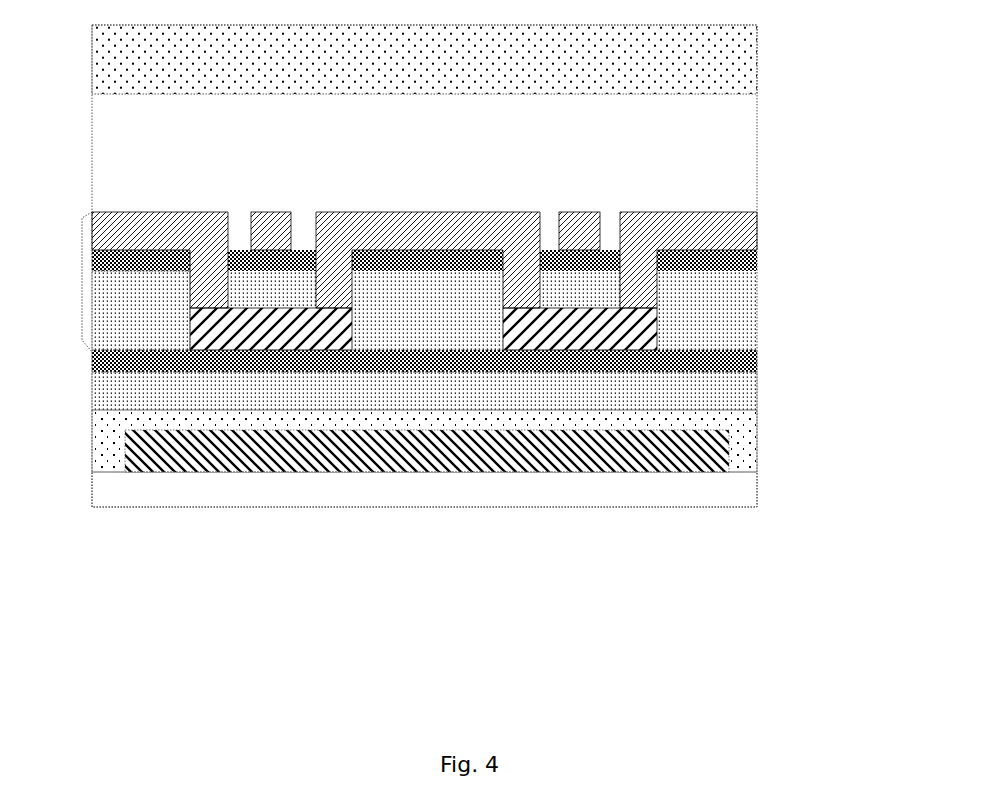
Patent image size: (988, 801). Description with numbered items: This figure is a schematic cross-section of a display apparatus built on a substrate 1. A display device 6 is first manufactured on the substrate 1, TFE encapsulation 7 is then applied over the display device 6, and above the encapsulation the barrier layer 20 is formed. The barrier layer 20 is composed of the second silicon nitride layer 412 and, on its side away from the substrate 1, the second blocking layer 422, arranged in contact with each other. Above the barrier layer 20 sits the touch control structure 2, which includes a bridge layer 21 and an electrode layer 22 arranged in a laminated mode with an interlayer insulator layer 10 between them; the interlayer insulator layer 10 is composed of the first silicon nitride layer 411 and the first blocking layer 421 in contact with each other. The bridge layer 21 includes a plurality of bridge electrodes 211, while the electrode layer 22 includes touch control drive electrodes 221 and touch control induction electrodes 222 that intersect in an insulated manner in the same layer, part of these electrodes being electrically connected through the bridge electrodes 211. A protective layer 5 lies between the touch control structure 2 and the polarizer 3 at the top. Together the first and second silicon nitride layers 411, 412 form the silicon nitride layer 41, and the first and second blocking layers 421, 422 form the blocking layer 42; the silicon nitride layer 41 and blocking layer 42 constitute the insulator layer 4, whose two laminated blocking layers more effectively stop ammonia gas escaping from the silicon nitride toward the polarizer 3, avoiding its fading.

The substrate 1 is at (712, 490).
The touch control structure 2 is at (470, 443).
The polarizer 3 is at (717, 62).
The insulator layer 4 is at (505, 330).
The protective layer 5 is at (717, 153).
The display device 6 is at (710, 451).
The TFE encapsulation 7 is at (740, 424).
The interlayer insulator layer 10 is at (486, 300).
The barrier layer 20 is at (486, 380).
The bridge layer 21 is at (423, 519).
The bridge electrode 211 is at (273, 333).
The electrode layer 22 is at (485, 232).
The touch control drive electrode 221 is at (425, 218).
The touch control induction electrode 222 is at (585, 218).
The silicon nitride layer 41 is at (92, 397).
The first silicon nitride layer 411 is at (758, 313).
The second silicon nitride layer 412 is at (758, 393).
The blocking layer 42 is at (92, 365).
The first blocking layer 421 is at (758, 261).
The second blocking layer 422 is at (758, 362).